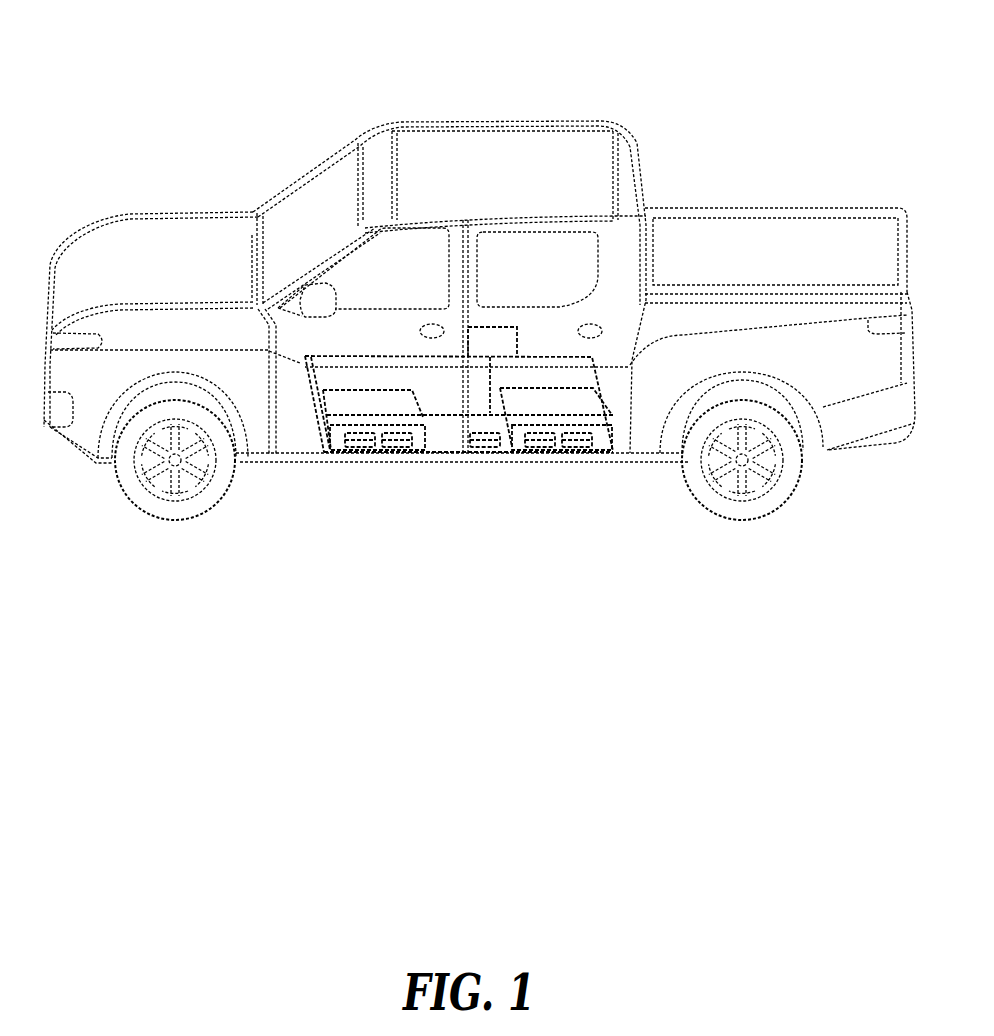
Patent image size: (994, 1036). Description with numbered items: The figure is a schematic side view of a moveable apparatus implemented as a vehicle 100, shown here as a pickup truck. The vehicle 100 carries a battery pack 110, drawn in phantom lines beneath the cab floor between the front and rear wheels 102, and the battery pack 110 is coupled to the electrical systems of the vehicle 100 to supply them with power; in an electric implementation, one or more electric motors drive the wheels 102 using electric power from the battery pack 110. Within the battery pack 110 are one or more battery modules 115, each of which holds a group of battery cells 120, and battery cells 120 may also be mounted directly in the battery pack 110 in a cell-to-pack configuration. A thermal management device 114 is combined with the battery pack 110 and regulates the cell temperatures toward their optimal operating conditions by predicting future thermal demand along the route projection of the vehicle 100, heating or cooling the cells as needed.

The vehicle 100 is at (104, 48).
The wheels 102 is at (158, 515).
The battery pack 110 is at (310, 415).
The thermal management device 114 is at (517, 328).
The battery modules 115 is at (438, 452).
The battery cells 120 is at (352, 450).